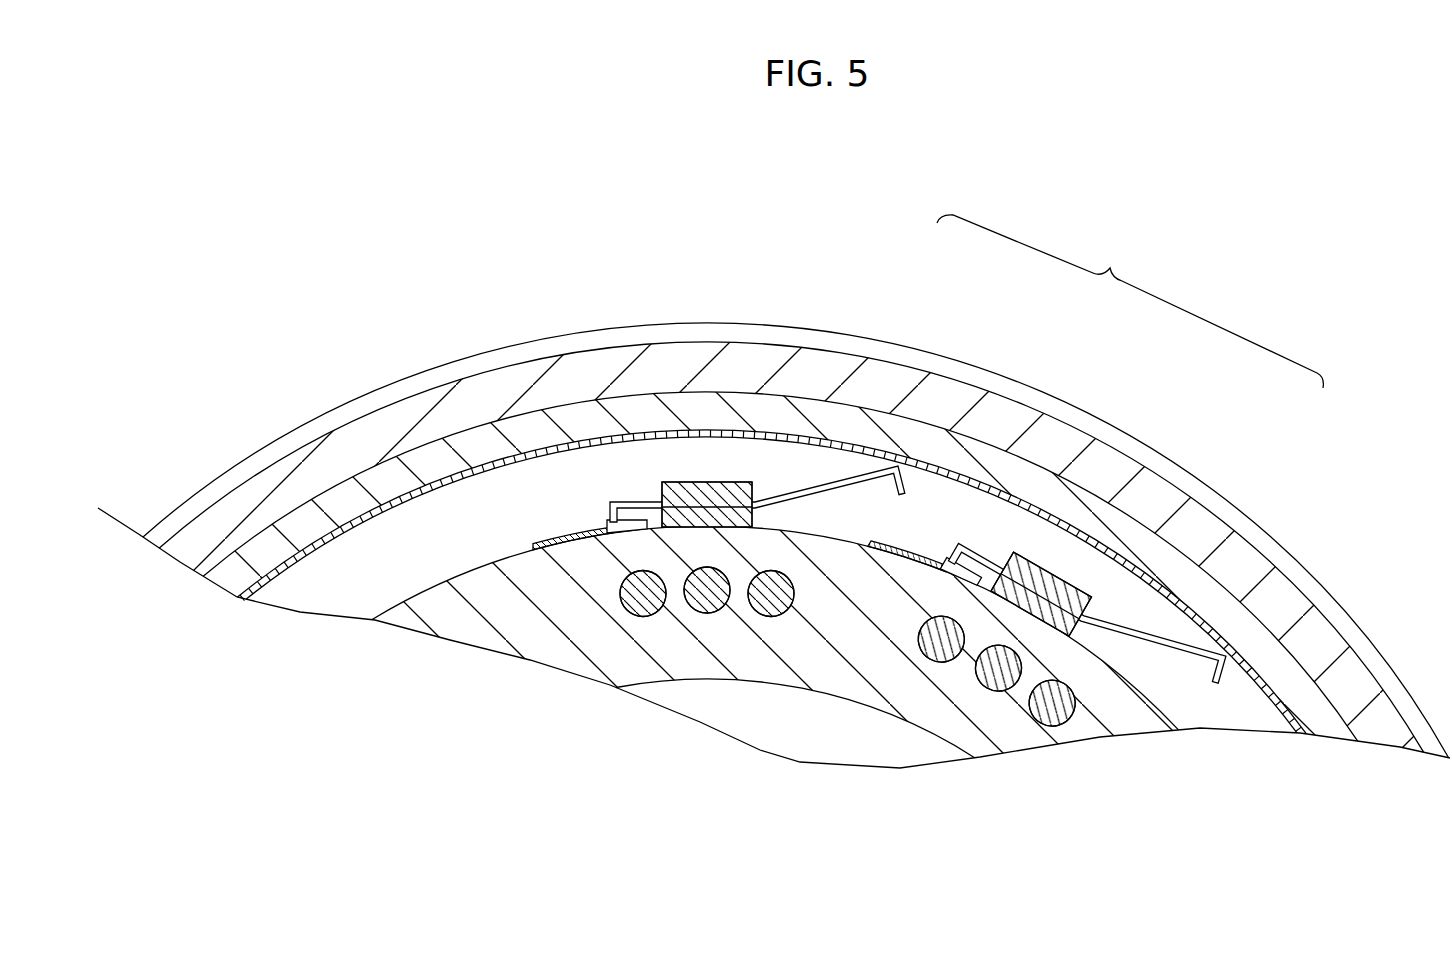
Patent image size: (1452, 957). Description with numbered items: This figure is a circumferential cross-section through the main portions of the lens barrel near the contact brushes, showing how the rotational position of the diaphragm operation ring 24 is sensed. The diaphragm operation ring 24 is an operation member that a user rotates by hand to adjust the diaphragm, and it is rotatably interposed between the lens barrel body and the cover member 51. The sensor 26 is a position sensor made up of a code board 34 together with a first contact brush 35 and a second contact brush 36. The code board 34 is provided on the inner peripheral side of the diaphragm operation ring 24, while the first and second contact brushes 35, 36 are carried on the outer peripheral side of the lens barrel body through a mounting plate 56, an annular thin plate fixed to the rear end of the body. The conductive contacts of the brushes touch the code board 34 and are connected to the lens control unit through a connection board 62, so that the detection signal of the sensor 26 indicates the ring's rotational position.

The diaphragm operation ring 24 is at (570, 411).
The sensor 26 is at (1130, 301).
The code board 34 is at (984, 470).
The first contact brush 35 is at (796, 482).
The second contact brush 36 is at (1140, 610).
The cover member 51 is at (364, 437).
The mounting plate 56 is at (507, 636).
The connection board 62 is at (527, 537).